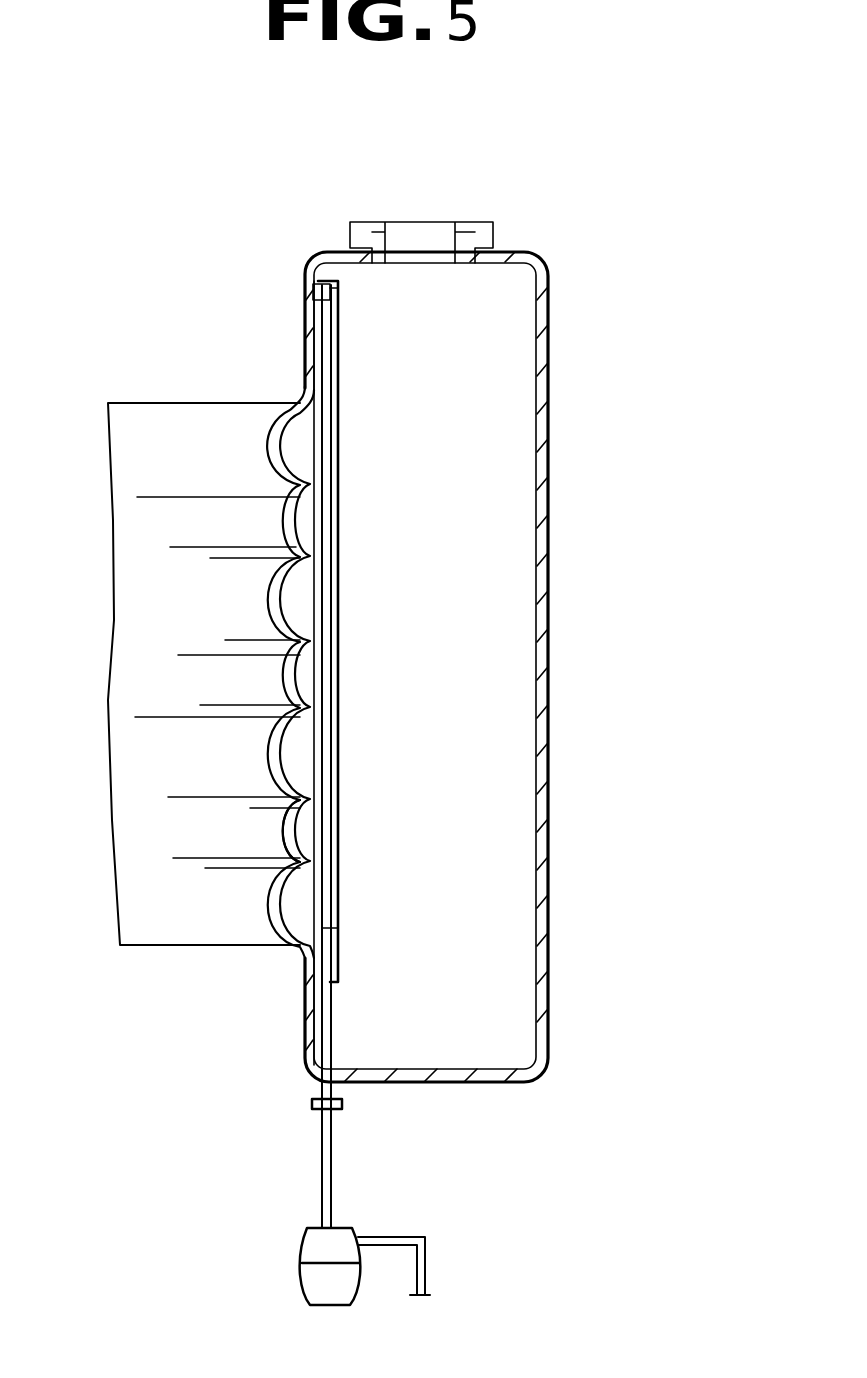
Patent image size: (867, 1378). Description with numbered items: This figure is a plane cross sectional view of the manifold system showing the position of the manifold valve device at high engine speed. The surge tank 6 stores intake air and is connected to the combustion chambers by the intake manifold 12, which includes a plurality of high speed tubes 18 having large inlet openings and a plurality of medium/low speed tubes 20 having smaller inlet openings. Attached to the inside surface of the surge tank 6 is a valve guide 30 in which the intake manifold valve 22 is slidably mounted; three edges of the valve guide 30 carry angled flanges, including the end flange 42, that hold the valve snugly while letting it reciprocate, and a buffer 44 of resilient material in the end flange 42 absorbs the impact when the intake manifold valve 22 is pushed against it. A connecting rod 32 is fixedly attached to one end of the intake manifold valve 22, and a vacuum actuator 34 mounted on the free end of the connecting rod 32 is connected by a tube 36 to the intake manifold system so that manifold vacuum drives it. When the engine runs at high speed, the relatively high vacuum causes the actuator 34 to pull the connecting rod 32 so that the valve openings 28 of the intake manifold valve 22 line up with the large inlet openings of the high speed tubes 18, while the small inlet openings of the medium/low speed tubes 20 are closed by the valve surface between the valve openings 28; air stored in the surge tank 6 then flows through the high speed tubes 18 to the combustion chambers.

The surge tank 6 is at (553, 322).
The intake manifold 12 is at (137, 952).
The high speed tubes 18 is at (290, 948).
The medium/low speed tubes 20 is at (283, 830).
The intake manifold valve 22 is at (340, 802).
The valve openings 28 is at (338, 925).
The valve guide 30 is at (340, 625).
The connecting rod 32 is at (335, 1037).
The vacuum actuator 34 is at (322, 1276).
The tube 36 is at (430, 1268).
The end flange 42 is at (333, 293).
The buffer 44 is at (300, 296).